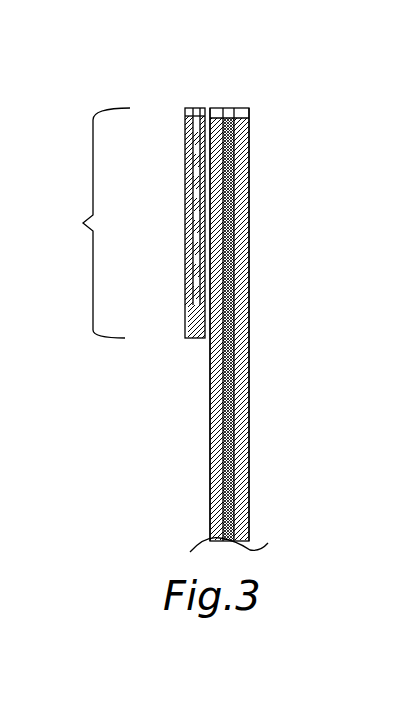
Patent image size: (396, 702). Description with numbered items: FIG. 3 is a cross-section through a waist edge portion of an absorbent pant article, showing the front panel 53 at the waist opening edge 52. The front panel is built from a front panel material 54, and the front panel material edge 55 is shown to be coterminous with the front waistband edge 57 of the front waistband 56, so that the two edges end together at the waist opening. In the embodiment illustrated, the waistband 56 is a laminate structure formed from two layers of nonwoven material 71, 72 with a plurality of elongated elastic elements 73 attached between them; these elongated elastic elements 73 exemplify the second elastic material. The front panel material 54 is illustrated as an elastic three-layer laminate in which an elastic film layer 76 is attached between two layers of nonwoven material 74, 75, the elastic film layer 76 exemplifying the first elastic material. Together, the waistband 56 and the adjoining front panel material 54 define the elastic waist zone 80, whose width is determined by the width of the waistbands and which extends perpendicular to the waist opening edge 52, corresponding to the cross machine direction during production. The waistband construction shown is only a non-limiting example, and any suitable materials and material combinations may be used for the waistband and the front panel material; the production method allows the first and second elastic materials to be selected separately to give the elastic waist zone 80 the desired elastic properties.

The waist opening edge 52 is at (237, 108).
The front panel 53 is at (289, 195).
The front panel material 54 is at (249, 260).
The front panel material edge 55 is at (231, 93).
The front waistband 56 is at (183, 210).
The front waistband edge 57 is at (189, 97).
The layer of nonwoven material 71 is at (183, 265).
The layer of nonwoven material 72 is at (183, 290).
The elongated elastic elements 73 is at (183, 177).
The layer of nonwoven material 74 is at (210, 400).
The layer of nonwoven material 75 is at (249, 427).
The elastic film layer 76 is at (217, 458).
The elastic waist zone 80 is at (90, 223).